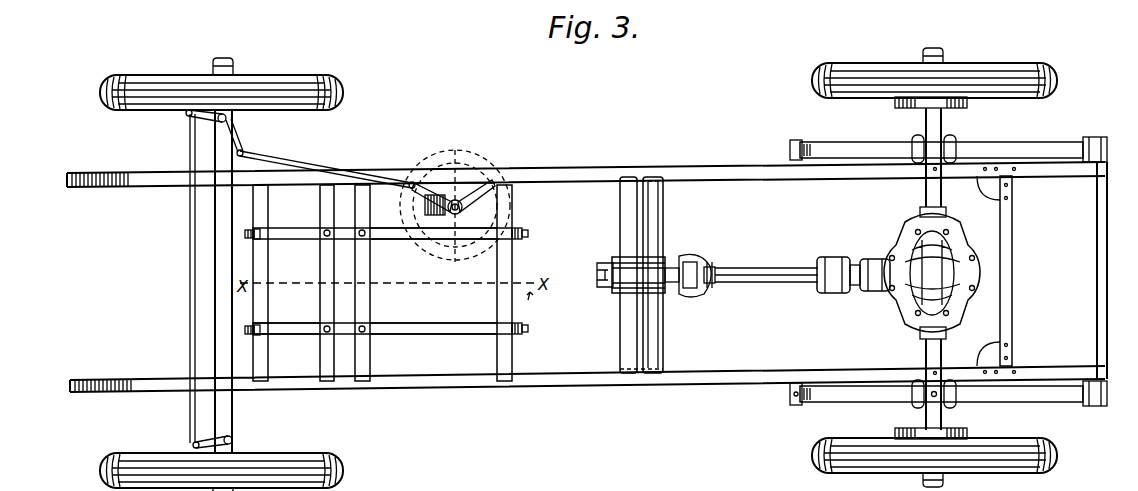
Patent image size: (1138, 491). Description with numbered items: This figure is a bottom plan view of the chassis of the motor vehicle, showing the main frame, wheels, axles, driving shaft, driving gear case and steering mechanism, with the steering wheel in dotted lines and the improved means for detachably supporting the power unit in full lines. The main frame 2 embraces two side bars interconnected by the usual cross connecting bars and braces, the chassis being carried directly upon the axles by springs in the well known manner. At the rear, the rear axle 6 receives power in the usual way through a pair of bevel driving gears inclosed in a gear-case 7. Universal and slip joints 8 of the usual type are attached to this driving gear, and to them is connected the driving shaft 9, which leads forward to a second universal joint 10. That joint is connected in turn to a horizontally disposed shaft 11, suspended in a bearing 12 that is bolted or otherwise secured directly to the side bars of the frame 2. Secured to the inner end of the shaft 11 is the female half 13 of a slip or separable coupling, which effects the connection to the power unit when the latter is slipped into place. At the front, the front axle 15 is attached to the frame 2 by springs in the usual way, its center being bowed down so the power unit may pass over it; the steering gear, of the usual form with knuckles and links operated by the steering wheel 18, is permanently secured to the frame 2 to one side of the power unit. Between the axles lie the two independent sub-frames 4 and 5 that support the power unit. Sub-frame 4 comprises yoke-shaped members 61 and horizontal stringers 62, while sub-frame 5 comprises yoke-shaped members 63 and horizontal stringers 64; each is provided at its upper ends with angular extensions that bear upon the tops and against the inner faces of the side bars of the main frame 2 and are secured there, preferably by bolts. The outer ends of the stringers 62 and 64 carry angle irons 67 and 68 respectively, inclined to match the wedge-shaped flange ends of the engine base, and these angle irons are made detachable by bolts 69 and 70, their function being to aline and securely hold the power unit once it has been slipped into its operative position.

The main frame 2 is at (708, 176).
The sub-frame 4 is at (530, 305).
The sub-frame 5 is at (399, 283).
The rear axle 6 is at (941, 356).
The gear-case 7 is at (920, 252).
The universal and slip joints 8 is at (840, 294).
The driving shaft 9 is at (765, 284).
The universal joint 10 is at (690, 298).
The horizontally disposed shaft 11 is at (675, 266).
The bearing 12 is at (620, 252).
The female half of slip coupling 13 is at (607, 290).
The front axle 15 is at (216, 410).
The steering wheel 18 is at (459, 160).
The yoke-shaped members 61 is at (364, 262).
The horizontal stringers 62 is at (448, 334).
The yoke-shaped members 63 is at (322, 210).
The horizontal stringers 64 is at (300, 334).
The angle irons 67 is at (522, 236).
The angle irons 68 is at (172, 354).
The bolts 69 is at (528, 232).
The bolts 70 is at (246, 235).